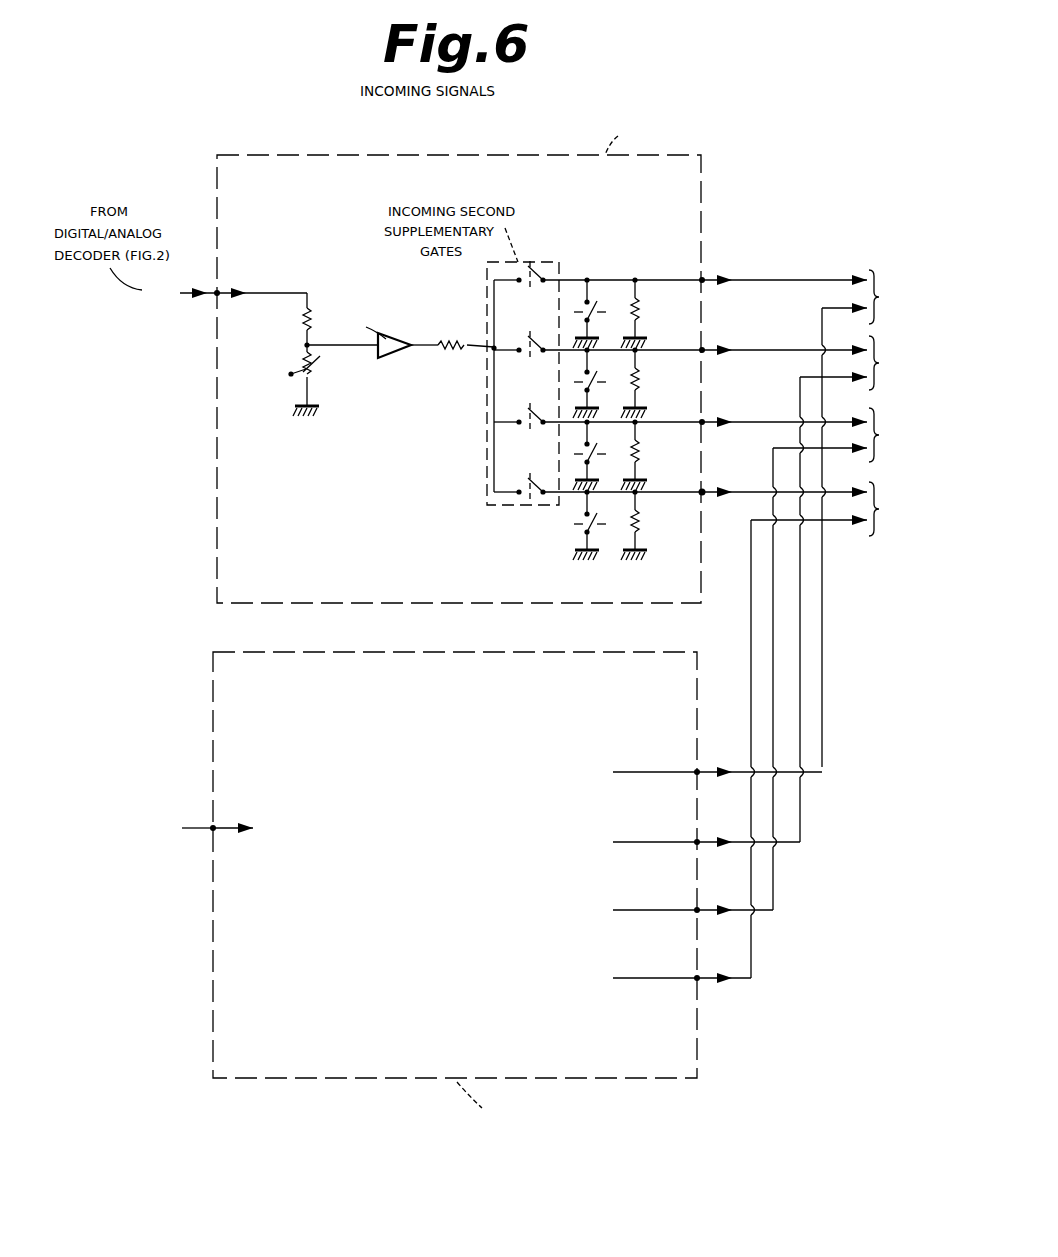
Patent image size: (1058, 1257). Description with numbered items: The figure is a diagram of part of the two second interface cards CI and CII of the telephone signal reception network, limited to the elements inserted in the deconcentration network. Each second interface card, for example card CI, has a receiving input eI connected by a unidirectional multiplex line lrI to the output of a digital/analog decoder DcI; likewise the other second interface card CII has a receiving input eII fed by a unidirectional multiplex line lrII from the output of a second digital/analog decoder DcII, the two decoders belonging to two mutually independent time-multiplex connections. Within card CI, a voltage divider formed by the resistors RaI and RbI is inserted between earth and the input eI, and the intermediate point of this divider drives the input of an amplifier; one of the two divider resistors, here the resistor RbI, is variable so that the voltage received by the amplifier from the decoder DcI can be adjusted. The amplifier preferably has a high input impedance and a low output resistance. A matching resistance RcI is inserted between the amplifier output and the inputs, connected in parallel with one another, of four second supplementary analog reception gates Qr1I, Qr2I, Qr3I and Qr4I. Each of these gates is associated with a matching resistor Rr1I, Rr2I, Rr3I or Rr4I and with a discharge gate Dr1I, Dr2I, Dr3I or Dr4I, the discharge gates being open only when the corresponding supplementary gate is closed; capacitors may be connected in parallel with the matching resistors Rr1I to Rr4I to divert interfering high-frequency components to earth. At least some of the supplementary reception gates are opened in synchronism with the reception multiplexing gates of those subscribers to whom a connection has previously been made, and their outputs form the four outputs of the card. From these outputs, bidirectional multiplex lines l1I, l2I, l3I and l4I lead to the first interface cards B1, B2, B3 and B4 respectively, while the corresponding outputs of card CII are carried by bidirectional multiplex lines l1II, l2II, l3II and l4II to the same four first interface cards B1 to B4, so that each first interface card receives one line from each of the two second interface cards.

The second interface card CI is at (585, 155).
The second interface card CII is at (558, 651).
The digital/analog decoder DcI is at (182, 293).
The digital/analog decoder DcII is at (178, 827).
The unidirectional multiplex line lrI is at (213, 297).
The unidirectional multiplex line lrII is at (205, 828).
The receiving input eI is at (219, 290).
The receiving input eII is at (216, 826).
The voltage divider resistor RaI is at (318, 318).
The variable voltage divider resistor RbI is at (313, 373).
The matching resistance RcI is at (453, 338).
The second supplementary analog reception gate Qr1I is at (534, 268).
The second supplementary analog reception gate Qr2I is at (522, 338).
The second supplementary analog reception gate Qr3I is at (522, 410).
The second supplementary analog reception gate Qr4I is at (522, 482).
The discharge gate Dr1I is at (594, 296).
The discharge gate Dr2I is at (582, 375).
The discharge gate Dr3I is at (582, 443).
The discharge gate Dr4I is at (582, 531).
The matching resistor Rr1I is at (639, 294).
The matching resistor Rr2I is at (638, 384).
The matching resistor Rr3I is at (637, 454).
The matching resistor Rr4I is at (637, 522).
The bidirectional multiplex line l1I is at (778, 278).
The bidirectional multiplex line l2I is at (769, 348).
The bidirectional multiplex line l3I is at (838, 420).
The bidirectional multiplex line l4I is at (838, 546).
The bidirectional multiplex line l1II is at (830, 304).
The bidirectional multiplex line l2II is at (800, 382).
The bidirectional multiplex line l3II is at (832, 450).
The bidirectional multiplex line l4II is at (833, 568).
The first interface card B1 is at (887, 297).
The first interface card B2 is at (887, 363).
The first interface card B3 is at (887, 435).
The first interface card B4 is at (887, 509).